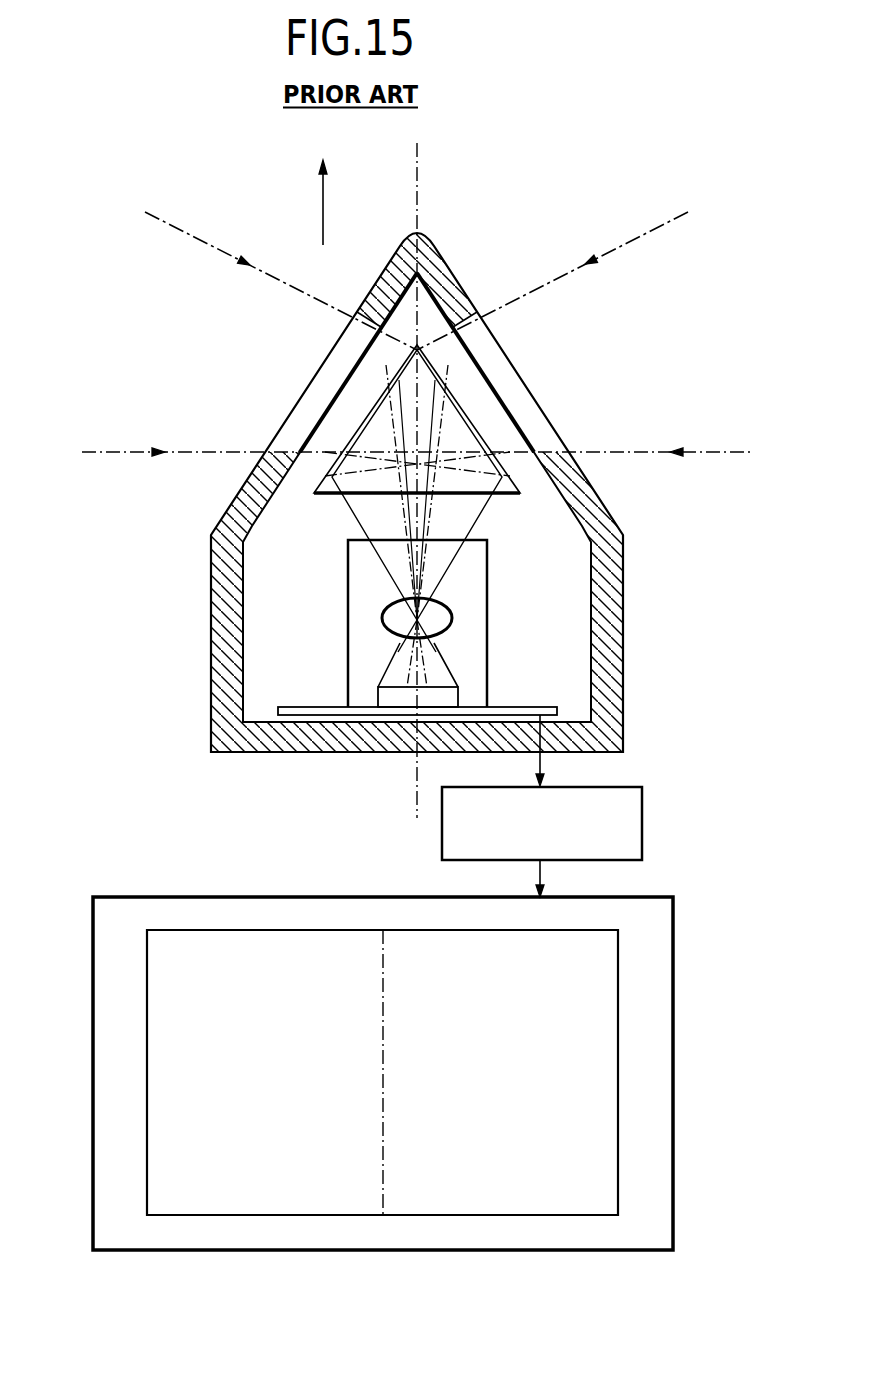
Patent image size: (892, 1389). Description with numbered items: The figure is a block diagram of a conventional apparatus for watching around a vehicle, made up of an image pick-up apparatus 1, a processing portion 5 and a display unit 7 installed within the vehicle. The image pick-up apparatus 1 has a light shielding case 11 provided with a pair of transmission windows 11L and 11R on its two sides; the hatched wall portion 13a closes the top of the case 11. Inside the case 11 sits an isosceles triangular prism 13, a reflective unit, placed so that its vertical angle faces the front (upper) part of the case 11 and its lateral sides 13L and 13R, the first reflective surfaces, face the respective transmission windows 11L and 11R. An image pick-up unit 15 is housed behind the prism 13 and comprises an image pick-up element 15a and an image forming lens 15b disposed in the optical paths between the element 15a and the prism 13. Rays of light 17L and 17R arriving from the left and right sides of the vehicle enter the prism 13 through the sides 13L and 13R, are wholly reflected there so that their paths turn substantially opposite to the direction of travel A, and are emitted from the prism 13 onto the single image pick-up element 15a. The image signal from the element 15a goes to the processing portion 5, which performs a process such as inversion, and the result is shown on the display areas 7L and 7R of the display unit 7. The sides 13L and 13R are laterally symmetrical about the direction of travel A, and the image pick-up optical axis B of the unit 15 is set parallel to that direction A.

The image pick-up apparatus 1 is at (172, 503).
The processing portion 5 is at (645, 823).
The display unit 7 is at (123, 884).
The display area 7L is at (271, 1205).
The display area 7R is at (501, 1203).
The light shielding case 11 is at (200, 612).
The transmission window 11L is at (368, 324).
The transmission window 11R is at (466, 324).
The isosceles triangular prism 13 is at (335, 437).
The top portion of housing 13a is at (452, 272).
The lateral side 13L is at (360, 418).
The lateral side 13R is at (466, 418).
The image pick-up unit 15 is at (335, 575).
The image pick-up element 15a is at (458, 704).
The image forming lens 15b is at (455, 620).
The ray of light 17L is at (183, 231).
The ray of light 17R is at (657, 227).
The direction of travel A is at (320, 212).
The image pick-up optical axis B is at (419, 220).